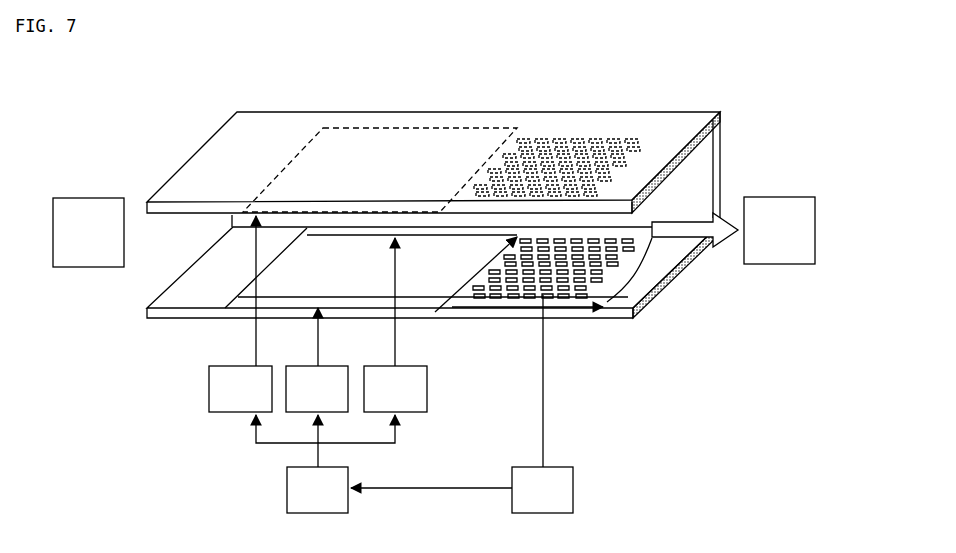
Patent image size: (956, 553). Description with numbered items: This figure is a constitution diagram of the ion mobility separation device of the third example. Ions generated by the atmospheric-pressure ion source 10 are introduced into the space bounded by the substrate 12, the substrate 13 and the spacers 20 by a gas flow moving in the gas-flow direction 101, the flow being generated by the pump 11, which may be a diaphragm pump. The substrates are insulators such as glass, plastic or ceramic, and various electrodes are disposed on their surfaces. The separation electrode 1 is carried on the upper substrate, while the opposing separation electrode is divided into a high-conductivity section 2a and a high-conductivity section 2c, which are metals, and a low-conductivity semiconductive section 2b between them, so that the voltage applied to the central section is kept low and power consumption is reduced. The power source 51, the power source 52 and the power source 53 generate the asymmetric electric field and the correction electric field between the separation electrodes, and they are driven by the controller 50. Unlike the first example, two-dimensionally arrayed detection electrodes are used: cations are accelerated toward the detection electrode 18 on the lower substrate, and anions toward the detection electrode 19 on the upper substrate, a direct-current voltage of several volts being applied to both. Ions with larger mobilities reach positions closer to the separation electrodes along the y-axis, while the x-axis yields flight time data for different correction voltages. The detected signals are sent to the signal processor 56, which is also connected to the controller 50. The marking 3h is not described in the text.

The separation electrode 1 is at (380, 170).
The section with high conductivity 2a is at (247, 307).
The section with low conductivity 2b is at (318, 273).
The section with high conductivity 2c is at (352, 233).
The holding member 3h is at (753, 376).
The ion source 10 is at (88, 232).
The pump 11 is at (779, 230).
The substrate 12 is at (255, 128).
The substrate 13 is at (648, 358).
The detection electrode (for cations) 18 is at (634, 274).
The detection electrode (for anions) 19 is at (563, 167).
The spacer 20 is at (722, 150).
The controller 50 is at (325, 464).
The power source 51 is at (240, 314).
The power source 52 is at (317, 360).
The power source 53 is at (395, 325).
The signal processor 56 is at (462, 404).
The gas-flow direction 101 is at (698, 218).